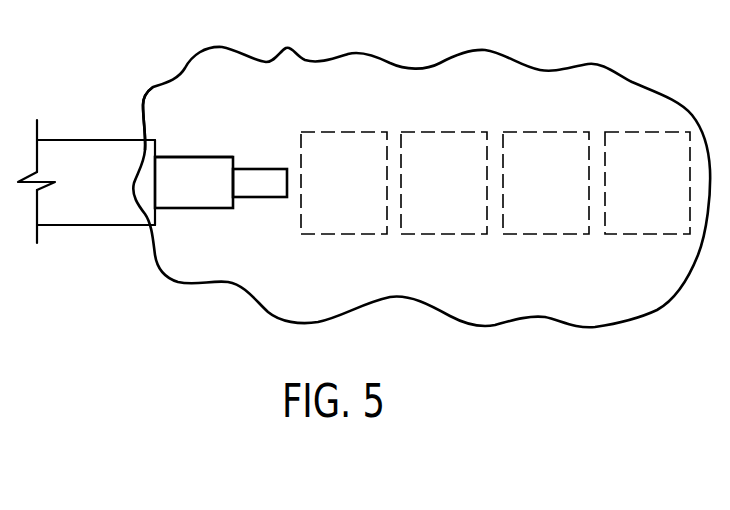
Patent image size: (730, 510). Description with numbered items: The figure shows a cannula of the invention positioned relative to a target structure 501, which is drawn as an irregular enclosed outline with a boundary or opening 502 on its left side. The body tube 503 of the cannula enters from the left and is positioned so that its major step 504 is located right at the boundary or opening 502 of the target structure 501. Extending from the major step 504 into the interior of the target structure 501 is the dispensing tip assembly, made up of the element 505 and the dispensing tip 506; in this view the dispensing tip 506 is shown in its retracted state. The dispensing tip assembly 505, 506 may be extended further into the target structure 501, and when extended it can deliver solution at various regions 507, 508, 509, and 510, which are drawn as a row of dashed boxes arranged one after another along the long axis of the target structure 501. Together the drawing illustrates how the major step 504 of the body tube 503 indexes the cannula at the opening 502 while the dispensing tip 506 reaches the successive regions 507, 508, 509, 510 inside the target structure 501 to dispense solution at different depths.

The target structure 501 is at (437, 103).
The boundary or opening of the target structure 502 is at (101, 95).
The body tube 503 is at (86, 212).
The major step 504 is at (201, 212).
The dispensing tip assembly 505 is at (218, 115).
The dispensing tip 506 is at (282, 222).
The region 507 is at (369, 190).
The region 508 is at (469, 190).
The region 509 is at (571, 190).
The region 510 is at (672, 190).